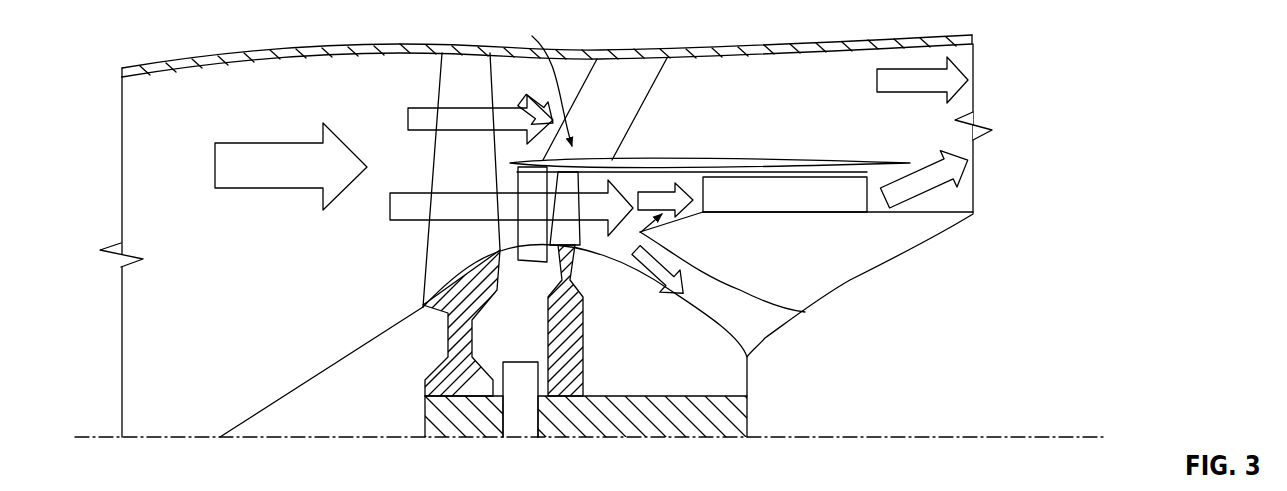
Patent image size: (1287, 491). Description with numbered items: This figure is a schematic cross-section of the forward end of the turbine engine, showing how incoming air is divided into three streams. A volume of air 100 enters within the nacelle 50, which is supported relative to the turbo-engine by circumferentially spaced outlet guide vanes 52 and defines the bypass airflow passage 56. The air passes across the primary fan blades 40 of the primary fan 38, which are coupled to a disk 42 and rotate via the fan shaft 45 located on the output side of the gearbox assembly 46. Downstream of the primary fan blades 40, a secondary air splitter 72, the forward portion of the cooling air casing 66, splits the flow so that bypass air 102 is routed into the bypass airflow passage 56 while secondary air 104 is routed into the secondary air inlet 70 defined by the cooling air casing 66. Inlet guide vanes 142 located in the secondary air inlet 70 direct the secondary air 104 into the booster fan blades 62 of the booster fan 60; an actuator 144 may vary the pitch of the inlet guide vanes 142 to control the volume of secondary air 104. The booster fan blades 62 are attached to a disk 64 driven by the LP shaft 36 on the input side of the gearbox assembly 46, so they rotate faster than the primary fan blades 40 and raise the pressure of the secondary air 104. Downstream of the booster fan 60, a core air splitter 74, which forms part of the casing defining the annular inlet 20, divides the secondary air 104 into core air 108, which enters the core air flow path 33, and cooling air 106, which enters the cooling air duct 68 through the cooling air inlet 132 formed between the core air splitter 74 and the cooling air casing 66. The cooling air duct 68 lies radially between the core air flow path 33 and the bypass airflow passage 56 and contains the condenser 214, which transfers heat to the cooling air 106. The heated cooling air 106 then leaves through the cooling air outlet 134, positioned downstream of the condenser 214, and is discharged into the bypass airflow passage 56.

The annular inlet 20 is at (632, 246).
The core air flow path 33 is at (743, 332).
The LP shaft 36 is at (723, 437).
The primary fan 38 is at (419, 171).
The primary fan blades 40 is at (453, 97).
The disk 42 is at (447, 341).
The fan shaft 45 is at (463, 434).
The gearbox assembly 46 is at (532, 434).
The nacelle 50 is at (264, 46).
The outlet guide vanes 52 is at (640, 73).
The bypass airflow passage 56 is at (772, 132).
The booster fan 60 is at (534, 82).
The booster fan blades 62 is at (568, 183).
The disk 64 is at (588, 300).
The cooling air casing 66 is at (810, 165).
The cooling air duct 68 is at (650, 234).
The secondary air inlet 70 is at (512, 181).
The secondary air splitter 72 is at (534, 96).
The core air splitter 74 is at (727, 282).
The volume of air 100 is at (240, 190).
The bypass air 102 is at (420, 117).
The secondary air 104 is at (413, 221).
The cooling air 106 is at (680, 192).
The core air 108 is at (725, 305).
The cooling air inlet 132 is at (634, 188).
The cooling air outlet 134 is at (957, 201).
The inlet guide vanes 142 is at (528, 230).
The actuator 144 is at (530, 259).
The condenser 214 is at (800, 213).